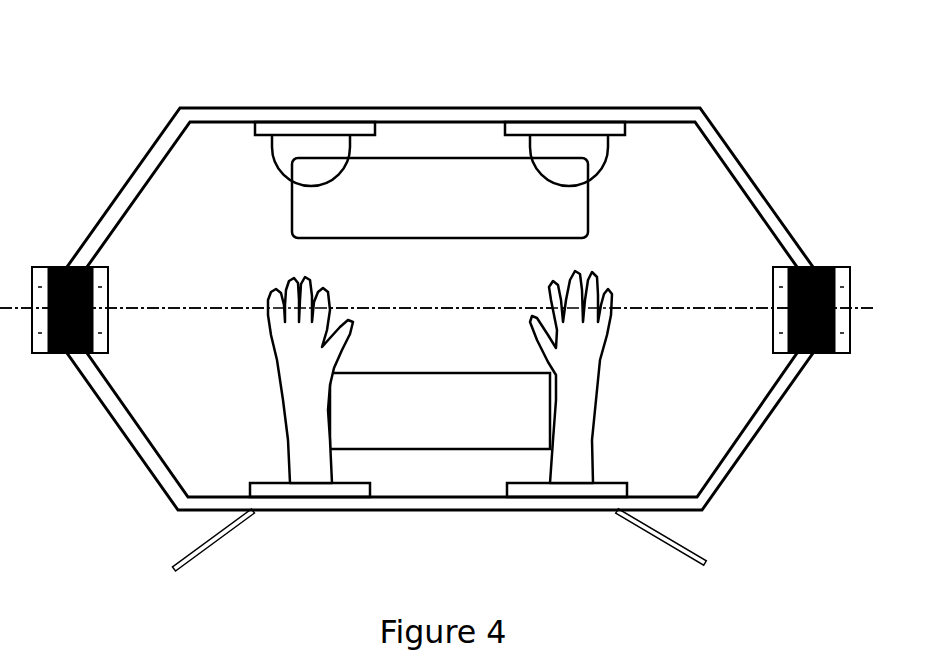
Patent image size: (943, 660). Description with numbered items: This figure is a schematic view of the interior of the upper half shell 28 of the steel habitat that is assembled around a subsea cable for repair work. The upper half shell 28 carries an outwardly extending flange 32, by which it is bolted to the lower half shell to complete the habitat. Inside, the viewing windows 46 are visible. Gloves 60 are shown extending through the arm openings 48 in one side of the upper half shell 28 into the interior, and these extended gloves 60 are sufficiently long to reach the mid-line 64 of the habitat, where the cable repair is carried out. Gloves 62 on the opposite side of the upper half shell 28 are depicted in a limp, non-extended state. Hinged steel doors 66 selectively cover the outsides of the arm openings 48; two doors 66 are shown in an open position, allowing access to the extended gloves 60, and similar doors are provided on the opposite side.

The upper half shell 28 is at (168, 66).
The outwardly extending flange 32 is at (773, 392).
The viewing windows 46 is at (440, 303).
The arm openings 48 is at (330, 125).
The gloves 60 is at (328, 283).
The gloves 62 is at (440, 160).
The mid-line 64 is at (707, 307).
The hinged steel doors 66 is at (212, 539).